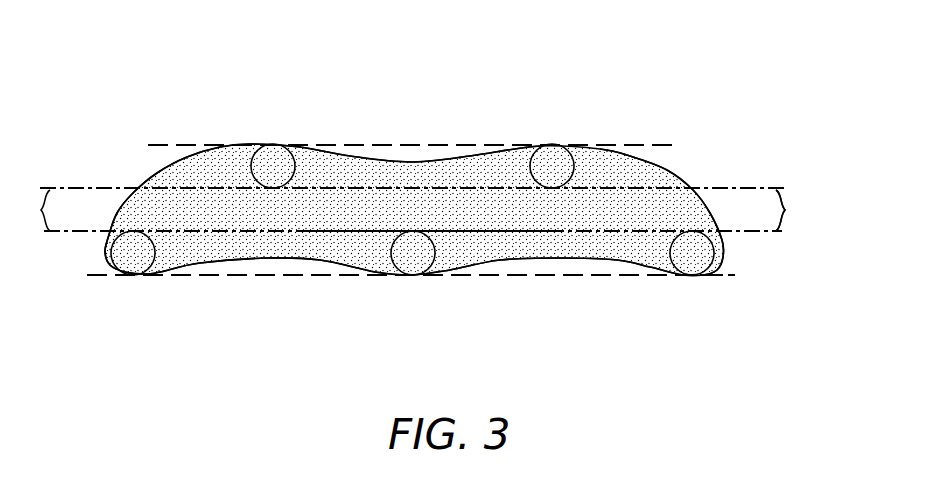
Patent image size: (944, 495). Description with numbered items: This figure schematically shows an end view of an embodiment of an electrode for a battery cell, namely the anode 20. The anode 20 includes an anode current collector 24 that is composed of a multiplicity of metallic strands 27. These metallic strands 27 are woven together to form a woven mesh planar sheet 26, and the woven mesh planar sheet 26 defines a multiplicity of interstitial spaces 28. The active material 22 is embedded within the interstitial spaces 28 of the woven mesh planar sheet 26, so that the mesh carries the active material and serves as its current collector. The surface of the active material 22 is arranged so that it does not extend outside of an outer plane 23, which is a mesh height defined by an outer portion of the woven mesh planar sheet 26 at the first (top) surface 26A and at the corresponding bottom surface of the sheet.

The anode 20 is at (148, 100).
The active material 22 is at (428, 162).
The outer plane 23 is at (390, 145).
The anode current collector 24 is at (812, 206).
The woven mesh planar sheet 26 is at (66, 240).
The first (top) surface 26A is at (677, 178).
The metallic strands 27 is at (717, 275).
The interstitial spaces 28 is at (557, 233).